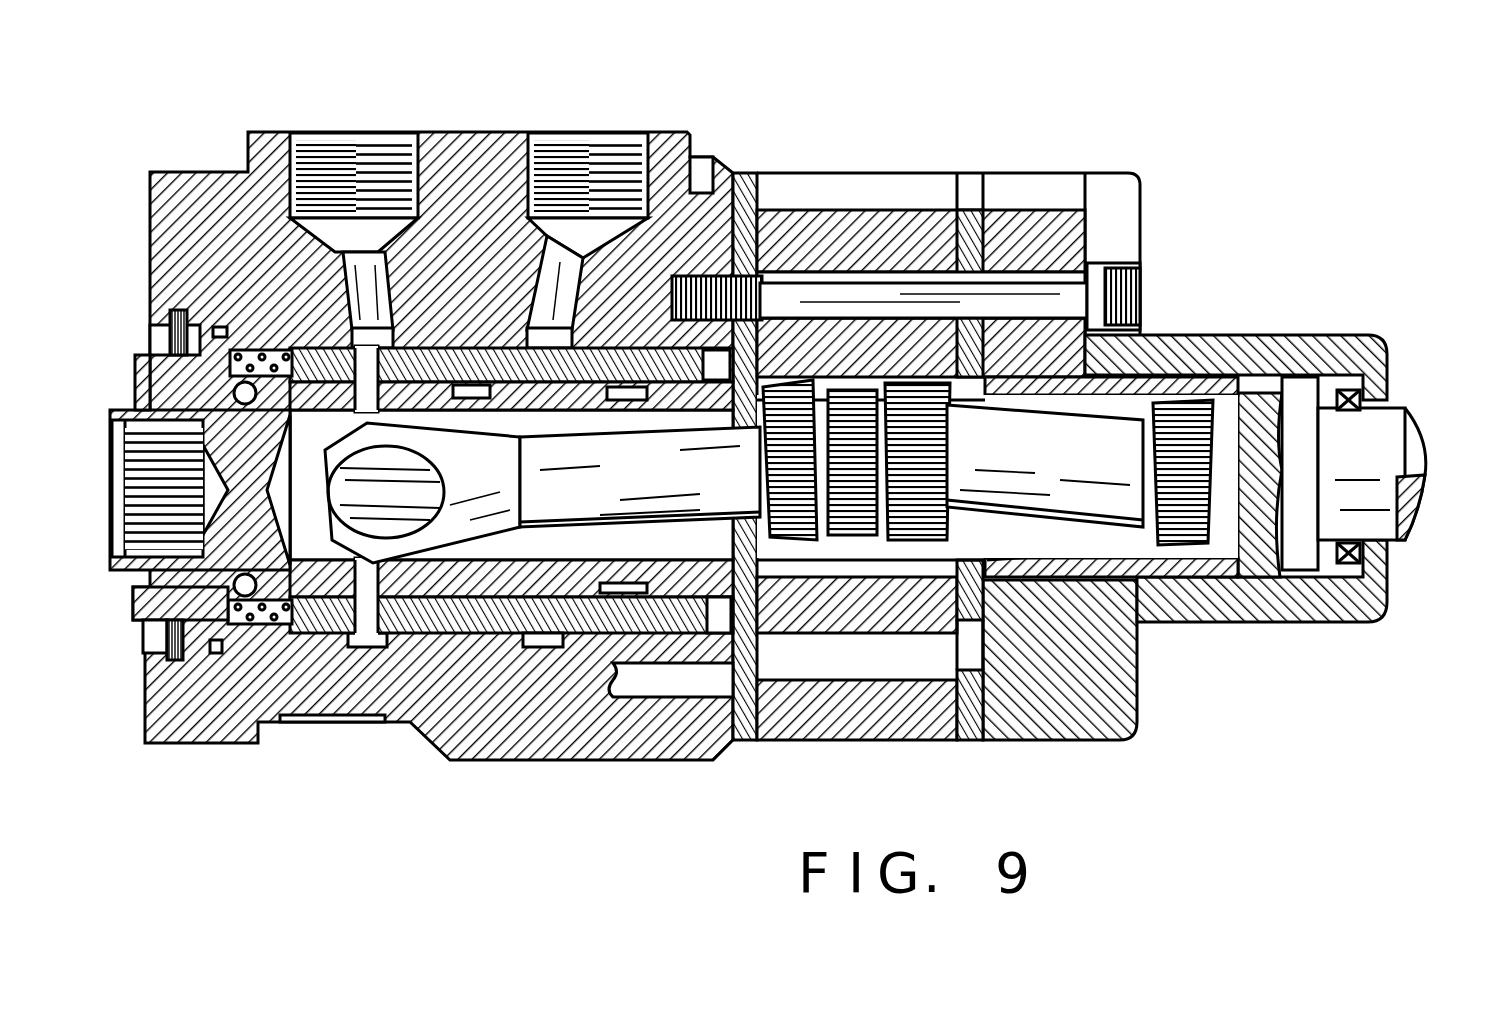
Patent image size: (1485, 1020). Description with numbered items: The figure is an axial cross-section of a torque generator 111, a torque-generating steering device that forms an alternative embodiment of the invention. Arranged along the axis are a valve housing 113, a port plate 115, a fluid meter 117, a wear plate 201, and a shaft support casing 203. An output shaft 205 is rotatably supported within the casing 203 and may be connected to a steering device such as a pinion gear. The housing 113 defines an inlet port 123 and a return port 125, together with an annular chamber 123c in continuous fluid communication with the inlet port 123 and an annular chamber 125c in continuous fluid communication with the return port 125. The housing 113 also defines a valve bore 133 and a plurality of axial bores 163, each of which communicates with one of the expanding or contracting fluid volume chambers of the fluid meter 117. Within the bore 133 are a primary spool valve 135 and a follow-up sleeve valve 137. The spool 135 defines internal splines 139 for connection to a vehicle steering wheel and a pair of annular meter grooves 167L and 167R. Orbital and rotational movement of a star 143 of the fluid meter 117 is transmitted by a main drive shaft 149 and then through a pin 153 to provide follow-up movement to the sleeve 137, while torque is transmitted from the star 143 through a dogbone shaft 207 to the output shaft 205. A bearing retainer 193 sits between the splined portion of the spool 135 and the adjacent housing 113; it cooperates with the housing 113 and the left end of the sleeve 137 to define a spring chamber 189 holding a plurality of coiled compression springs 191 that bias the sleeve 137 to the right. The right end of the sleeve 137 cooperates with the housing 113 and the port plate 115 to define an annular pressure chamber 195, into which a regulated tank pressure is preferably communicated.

The torque generator 111 is at (718, 120).
The valve housing 113 is at (162, 228).
The port plate 115 is at (742, 192).
The fluid meter 117 is at (857, 162).
The inlet port 123 is at (612, 165).
The annular chamber 123c is at (543, 650).
The return port 125 is at (400, 165).
The annular chamber 125c is at (377, 333).
The valve bore 133 is at (425, 628).
The spool valve 135 is at (668, 580).
The sleeve valve 137 is at (547, 400).
The internal splines 139 is at (117, 440).
The star 143 is at (930, 357).
The main drive shaft 149 is at (640, 477).
The pin 153 is at (372, 440).
The axial bores 163 is at (663, 680).
The annular meter groove 167L is at (462, 383).
The annular meter groove 167R is at (612, 383).
The spring chamber 189 is at (268, 352).
The compression springs 191 is at (262, 640).
The bearing retainer 193 is at (135, 600).
The annular pressure chamber 195 is at (713, 613).
The wear plate 201 is at (972, 190).
The shaft support casing 203 is at (1243, 352).
The output shaft 205 is at (1430, 535).
The dogbone shaft 207 is at (1080, 472).